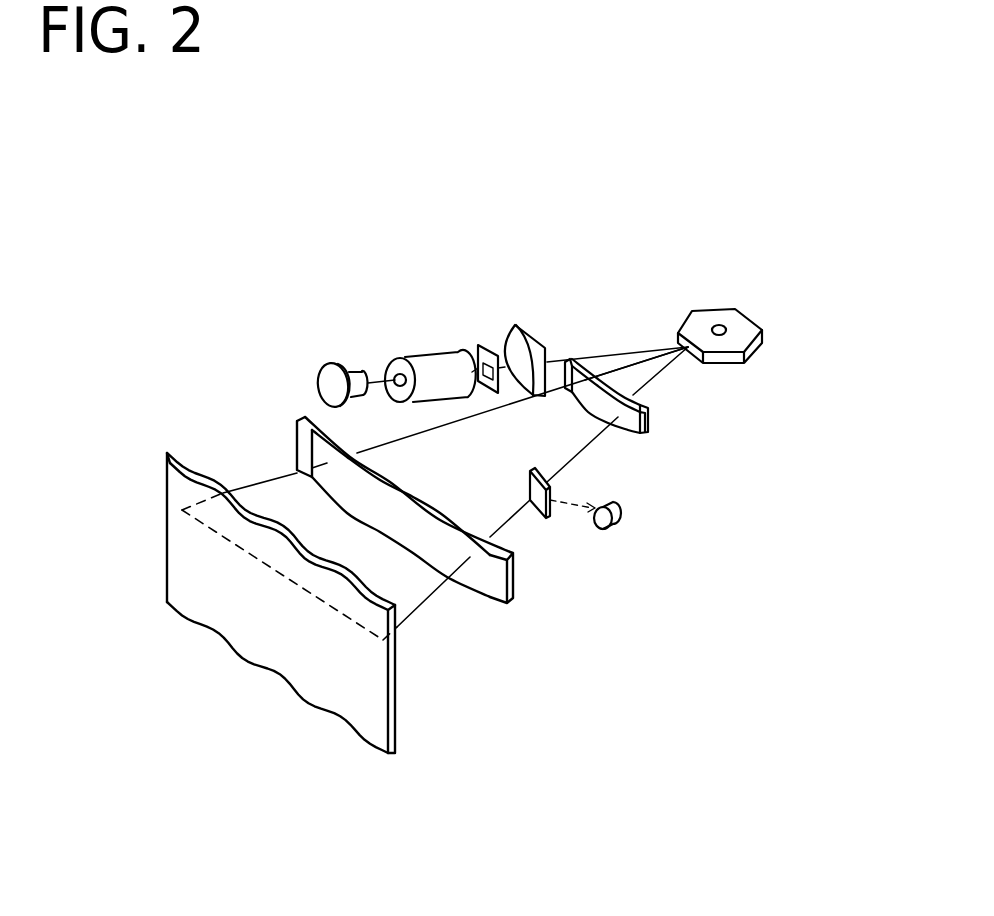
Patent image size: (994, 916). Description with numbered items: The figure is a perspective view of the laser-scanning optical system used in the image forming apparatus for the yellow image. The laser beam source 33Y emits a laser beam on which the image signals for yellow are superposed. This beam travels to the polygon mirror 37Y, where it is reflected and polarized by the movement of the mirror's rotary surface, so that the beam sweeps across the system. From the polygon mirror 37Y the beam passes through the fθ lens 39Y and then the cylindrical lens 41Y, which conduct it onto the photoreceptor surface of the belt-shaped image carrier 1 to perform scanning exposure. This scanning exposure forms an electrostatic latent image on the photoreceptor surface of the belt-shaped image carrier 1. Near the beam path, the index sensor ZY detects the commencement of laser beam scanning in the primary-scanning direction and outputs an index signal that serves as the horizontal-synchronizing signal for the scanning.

The belt-shaped image carrier 1 is at (167, 556).
The laser beam source 33Y is at (335, 360).
The polygon mirror 37Y is at (750, 318).
The fθ lens 39Y is at (650, 418).
The cylindrical lens 41Y is at (297, 439).
The index sensor ZY is at (623, 520).